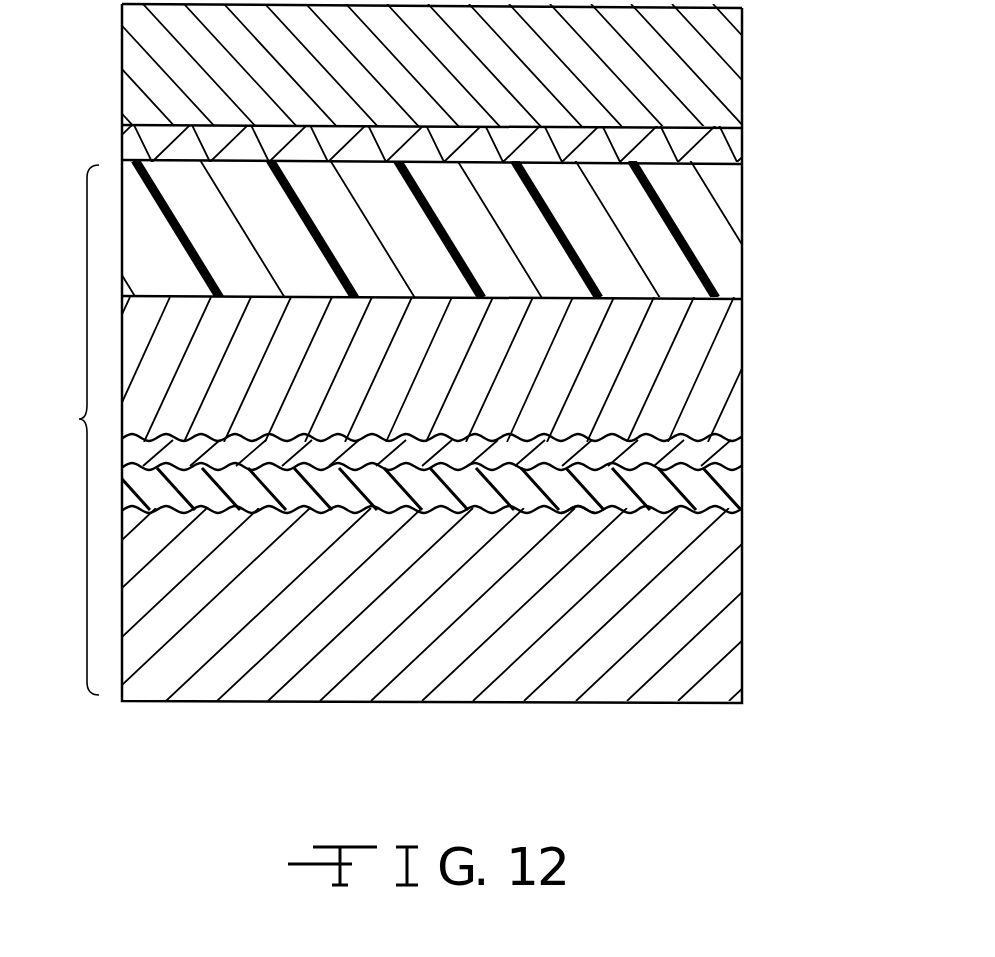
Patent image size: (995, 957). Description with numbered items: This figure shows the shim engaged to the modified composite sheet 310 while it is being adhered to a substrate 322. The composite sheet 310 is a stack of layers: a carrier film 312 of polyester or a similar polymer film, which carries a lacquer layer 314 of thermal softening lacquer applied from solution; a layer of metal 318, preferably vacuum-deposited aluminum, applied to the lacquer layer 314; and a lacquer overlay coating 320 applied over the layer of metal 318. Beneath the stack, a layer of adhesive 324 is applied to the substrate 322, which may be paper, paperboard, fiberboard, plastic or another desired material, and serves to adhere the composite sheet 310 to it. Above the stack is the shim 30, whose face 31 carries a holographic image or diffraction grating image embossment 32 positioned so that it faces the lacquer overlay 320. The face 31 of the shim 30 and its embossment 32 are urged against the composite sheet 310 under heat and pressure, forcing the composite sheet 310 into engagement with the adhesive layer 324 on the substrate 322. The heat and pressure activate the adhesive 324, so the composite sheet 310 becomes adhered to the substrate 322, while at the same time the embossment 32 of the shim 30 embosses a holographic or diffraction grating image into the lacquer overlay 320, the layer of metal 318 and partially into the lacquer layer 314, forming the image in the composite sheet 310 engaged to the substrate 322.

The shim 30 is at (723, 645).
The face 31 is at (687, 515).
The holographic image or diffraction grating image embossment 32 is at (575, 512).
The composite sheet 310 is at (467, 353).
The carrier film 312 is at (725, 200).
The lacquer layer 314 is at (727, 360).
The layer of metal 318 is at (727, 452).
The lacquer overlay coating 320 is at (732, 485).
The substrate 322 is at (732, 52).
The layer of adhesive 324 is at (727, 145).